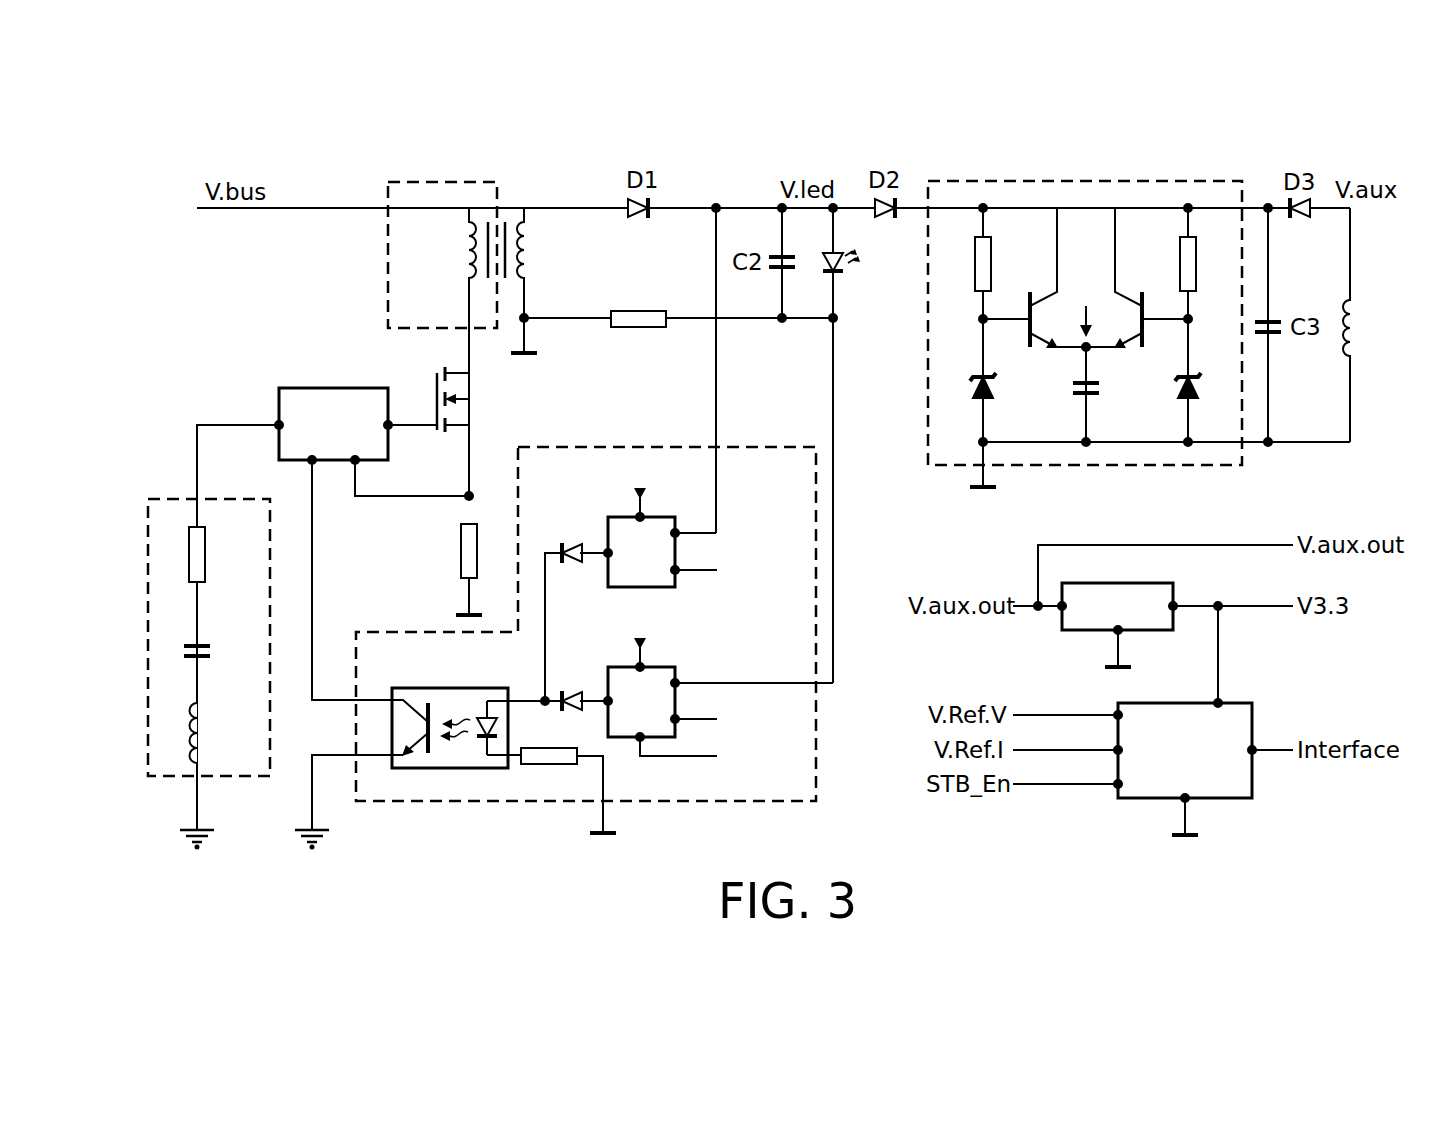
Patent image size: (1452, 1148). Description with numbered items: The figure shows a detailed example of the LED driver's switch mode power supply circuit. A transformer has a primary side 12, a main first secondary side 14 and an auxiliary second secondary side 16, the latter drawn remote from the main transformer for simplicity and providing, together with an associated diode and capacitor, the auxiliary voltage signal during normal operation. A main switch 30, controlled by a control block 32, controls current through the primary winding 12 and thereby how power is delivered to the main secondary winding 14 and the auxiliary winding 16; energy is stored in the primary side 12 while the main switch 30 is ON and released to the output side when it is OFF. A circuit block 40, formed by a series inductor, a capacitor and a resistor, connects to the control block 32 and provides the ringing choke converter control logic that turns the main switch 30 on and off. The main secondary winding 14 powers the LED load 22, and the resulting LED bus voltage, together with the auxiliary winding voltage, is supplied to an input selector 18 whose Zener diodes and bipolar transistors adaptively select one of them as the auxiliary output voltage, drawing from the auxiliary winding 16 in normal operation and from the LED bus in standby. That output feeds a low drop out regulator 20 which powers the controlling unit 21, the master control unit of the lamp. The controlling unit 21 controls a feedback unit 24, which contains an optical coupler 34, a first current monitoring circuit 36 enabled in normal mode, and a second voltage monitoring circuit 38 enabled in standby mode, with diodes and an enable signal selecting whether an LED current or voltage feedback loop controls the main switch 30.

The primary side 12 is at (427, 182).
The first secondary side 14 is at (540, 258).
The second secondary side 16 is at (1362, 304).
The input selector 18 is at (1115, 181).
The low drop out regulator 20 is at (1117, 625).
The controlling unit 21 is at (1185, 767).
The LED load 22 is at (842, 248).
The feedback unit 24 is at (654, 447).
The main switch 30 is at (463, 391).
The control block 32 is at (333, 426).
The optical coupler 34 is at (456, 768).
The first, current monitoring circuit 36 is at (641, 702).
The second, voltage monitoring circuit 38 is at (641, 550).
The circuit block 40 is at (170, 499).